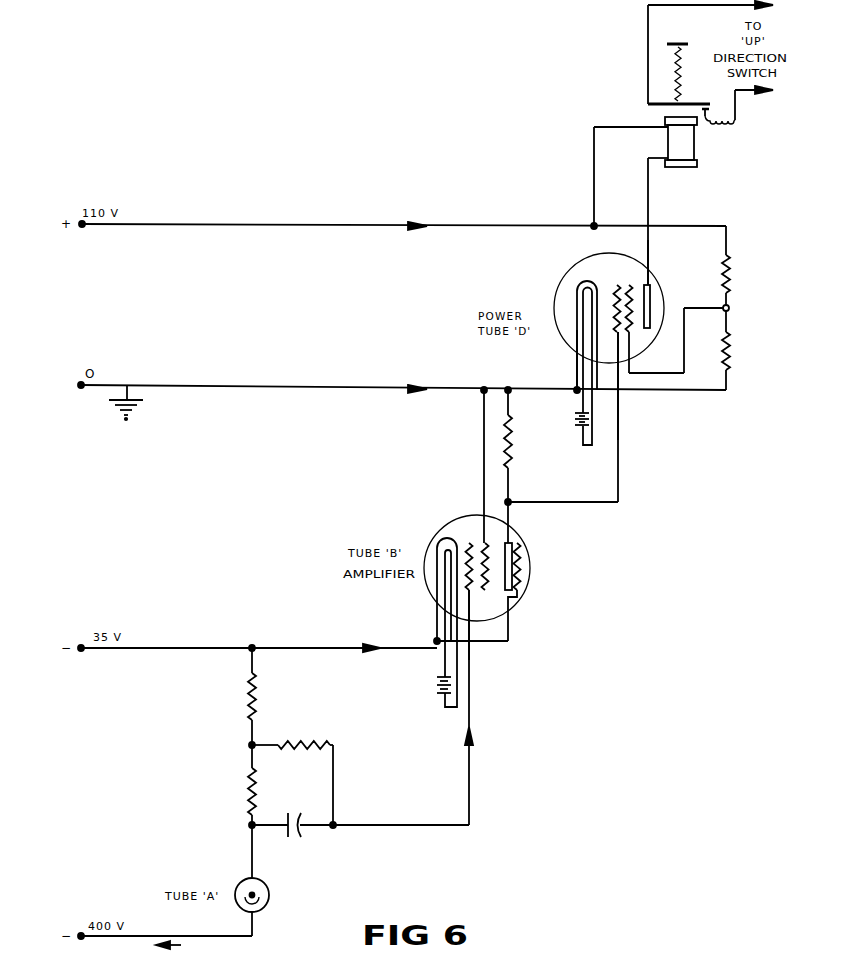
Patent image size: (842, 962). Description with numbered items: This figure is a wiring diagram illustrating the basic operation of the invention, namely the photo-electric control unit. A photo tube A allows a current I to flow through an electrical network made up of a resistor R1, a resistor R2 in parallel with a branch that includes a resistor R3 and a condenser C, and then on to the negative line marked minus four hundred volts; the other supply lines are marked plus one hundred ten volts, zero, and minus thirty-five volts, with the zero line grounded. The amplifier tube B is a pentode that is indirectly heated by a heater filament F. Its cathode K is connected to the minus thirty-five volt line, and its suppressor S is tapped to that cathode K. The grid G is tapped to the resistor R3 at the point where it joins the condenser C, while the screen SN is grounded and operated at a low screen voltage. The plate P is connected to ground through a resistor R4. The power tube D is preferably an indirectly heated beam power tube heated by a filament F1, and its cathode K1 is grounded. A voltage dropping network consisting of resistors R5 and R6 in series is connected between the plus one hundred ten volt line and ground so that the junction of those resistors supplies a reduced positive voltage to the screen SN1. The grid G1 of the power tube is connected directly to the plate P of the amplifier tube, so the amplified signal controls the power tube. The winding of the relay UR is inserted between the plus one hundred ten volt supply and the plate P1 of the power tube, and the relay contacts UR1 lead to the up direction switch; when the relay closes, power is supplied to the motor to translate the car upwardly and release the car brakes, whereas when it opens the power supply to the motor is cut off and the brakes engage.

The relay UR is at (691, 142).
The relay contacts UR1 is at (691, 84).
The plate P1 is at (654, 281).
The cathode K1 is at (569, 360).
The filament F1 is at (592, 366).
The grid G1 is at (625, 363).
The screen SN1 is at (645, 331).
The resistor R5 is at (734, 274).
The resistor R6 is at (735, 351).
The resistor R4 is at (517, 444).
The screen SN is at (472, 465).
The plate P is at (513, 544).
The cathode K is at (442, 622).
The heater filament F is at (445, 621).
The grid G is at (474, 603).
The suppressor S is at (514, 592).
The resistor R1 is at (261, 696).
The resistor R2 is at (238, 791).
The resistor R3 is at (304, 754).
The condenser C is at (294, 818).
The current I is at (173, 946).